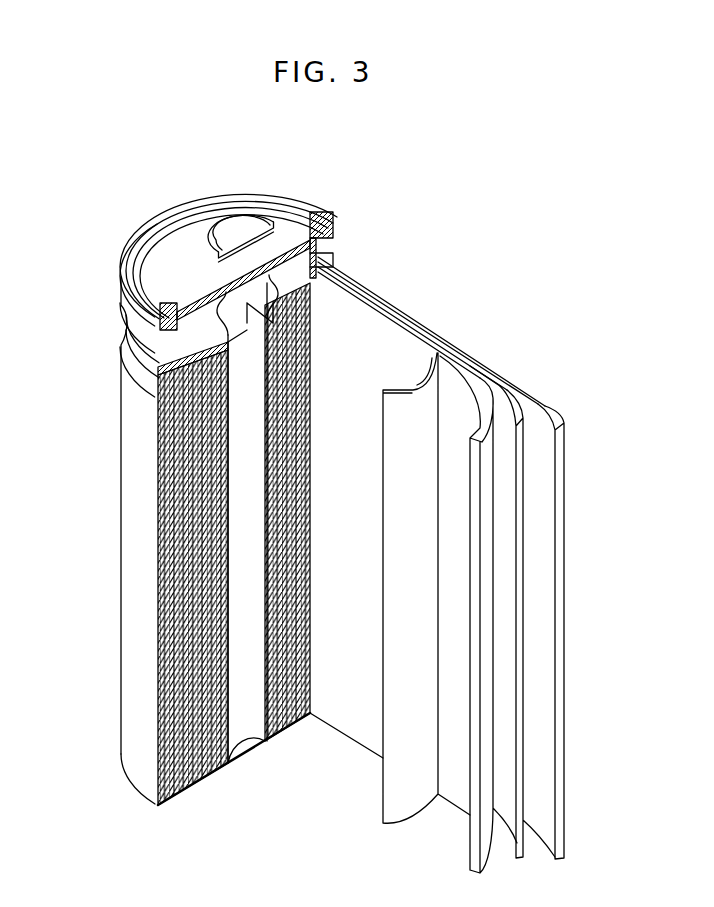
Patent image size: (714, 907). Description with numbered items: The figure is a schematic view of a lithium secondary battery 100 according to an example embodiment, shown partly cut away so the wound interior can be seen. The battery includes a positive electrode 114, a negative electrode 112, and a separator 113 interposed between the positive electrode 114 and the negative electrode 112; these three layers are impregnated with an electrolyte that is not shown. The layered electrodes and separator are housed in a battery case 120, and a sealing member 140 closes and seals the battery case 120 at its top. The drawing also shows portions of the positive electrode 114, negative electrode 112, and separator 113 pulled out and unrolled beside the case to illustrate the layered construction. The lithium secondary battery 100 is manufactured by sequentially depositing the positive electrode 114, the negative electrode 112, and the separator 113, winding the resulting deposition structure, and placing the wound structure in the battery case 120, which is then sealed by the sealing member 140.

The lithium secondary battery 100 is at (320, 514).
The negative electrode 112 is at (547, 401).
The separator 113 is at (414, 388).
The positive electrode 114 is at (485, 397).
The battery case 120 is at (121, 537).
The sealing member 140 is at (222, 232).